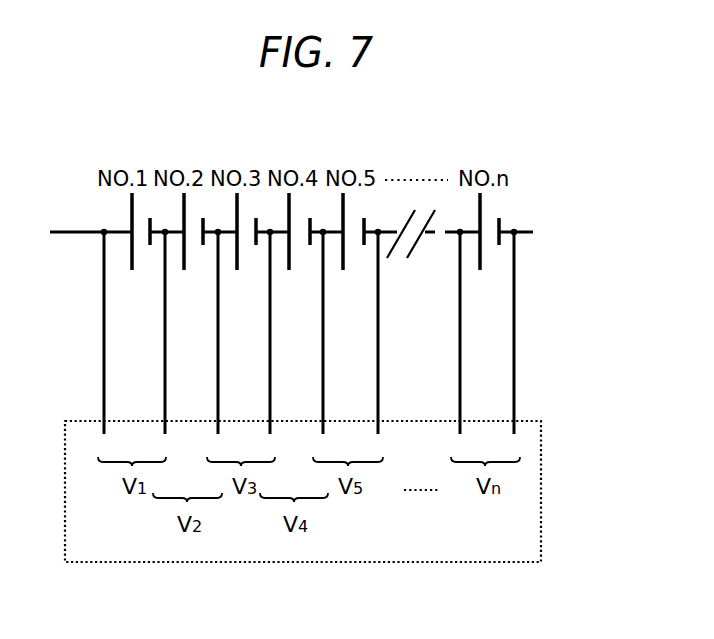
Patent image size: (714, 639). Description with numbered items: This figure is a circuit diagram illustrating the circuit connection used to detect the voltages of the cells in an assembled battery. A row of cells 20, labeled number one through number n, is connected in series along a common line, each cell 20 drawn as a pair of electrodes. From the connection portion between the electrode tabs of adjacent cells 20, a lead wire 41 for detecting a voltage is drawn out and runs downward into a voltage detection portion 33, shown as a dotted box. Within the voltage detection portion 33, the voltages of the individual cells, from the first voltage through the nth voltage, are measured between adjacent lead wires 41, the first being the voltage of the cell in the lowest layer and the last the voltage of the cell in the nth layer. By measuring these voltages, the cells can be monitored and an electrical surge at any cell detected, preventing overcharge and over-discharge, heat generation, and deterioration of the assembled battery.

The cell 20 is at (132, 212).
The lead wire 41 is at (165, 360).
The voltage detection portion 33 is at (543, 449).